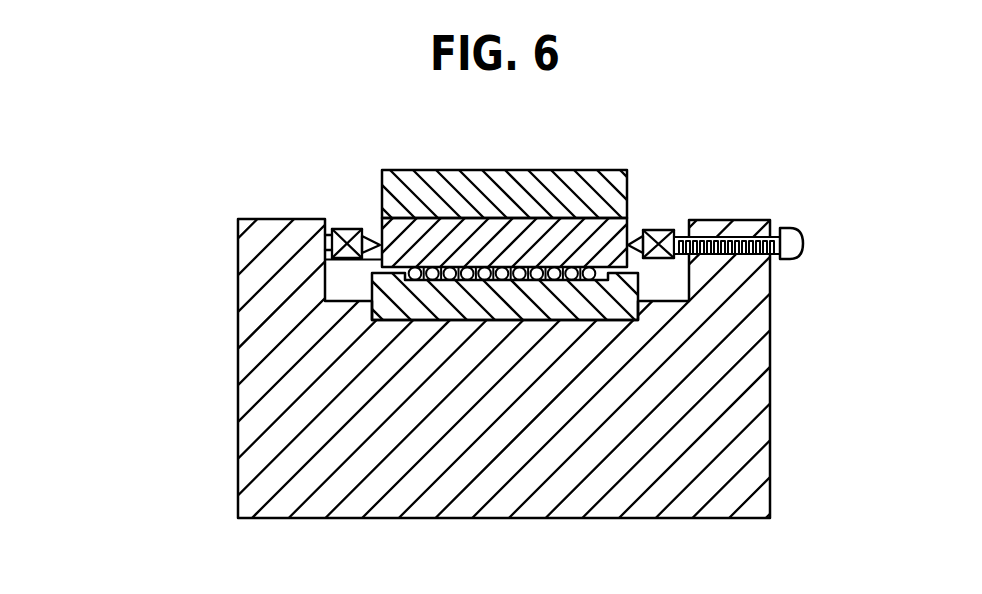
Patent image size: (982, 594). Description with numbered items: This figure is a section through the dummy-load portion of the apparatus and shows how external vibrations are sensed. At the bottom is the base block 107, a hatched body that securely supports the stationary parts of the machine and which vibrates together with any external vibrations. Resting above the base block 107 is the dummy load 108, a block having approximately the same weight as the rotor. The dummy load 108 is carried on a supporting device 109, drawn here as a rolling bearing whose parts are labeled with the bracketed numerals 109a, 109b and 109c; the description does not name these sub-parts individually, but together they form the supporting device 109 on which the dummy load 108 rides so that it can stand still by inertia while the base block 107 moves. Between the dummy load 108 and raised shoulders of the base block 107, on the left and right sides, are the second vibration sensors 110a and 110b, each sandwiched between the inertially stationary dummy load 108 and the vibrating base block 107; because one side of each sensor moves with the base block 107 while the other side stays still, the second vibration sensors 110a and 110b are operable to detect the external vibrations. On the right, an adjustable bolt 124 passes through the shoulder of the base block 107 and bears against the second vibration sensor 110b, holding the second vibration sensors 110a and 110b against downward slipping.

The base block 107 is at (238, 465).
The dummy load 108 is at (468, 170).
The supporting device 109 is at (353, 330).
The upper race 109a is at (382, 258).
The lower race 109b is at (372, 316).
The balls 109c is at (380, 274).
The second vibration sensor 110a is at (343, 228).
The second vibration sensor 110b is at (650, 229).
The adjustable bolt 124 is at (793, 238).